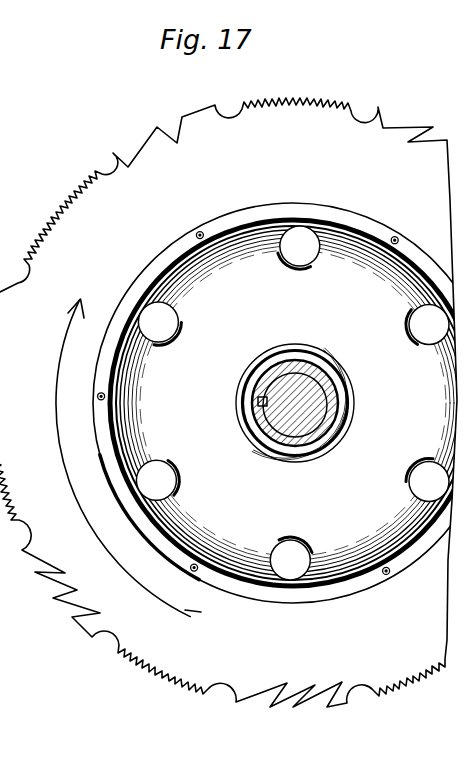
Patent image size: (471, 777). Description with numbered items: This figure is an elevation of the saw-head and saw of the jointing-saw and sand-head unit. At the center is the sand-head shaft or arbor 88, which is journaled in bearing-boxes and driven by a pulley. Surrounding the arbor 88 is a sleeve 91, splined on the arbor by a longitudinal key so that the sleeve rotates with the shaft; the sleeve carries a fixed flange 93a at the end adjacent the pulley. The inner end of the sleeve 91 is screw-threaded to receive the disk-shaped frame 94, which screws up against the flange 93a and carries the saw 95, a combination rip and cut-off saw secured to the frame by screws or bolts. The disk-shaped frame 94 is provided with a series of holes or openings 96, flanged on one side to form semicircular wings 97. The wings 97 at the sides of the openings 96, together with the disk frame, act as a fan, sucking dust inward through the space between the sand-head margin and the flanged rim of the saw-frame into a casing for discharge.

The sand-head shaft or arbor 88 is at (322, 358).
The sleeve 91 is at (333, 386).
The fixed flange 93a is at (256, 396).
The disk-shaped frame 94 is at (300, 506).
The saw 95 is at (228, 402).
The holes or openings 96 is at (161, 335).
The semicircular wings 97 is at (302, 268).